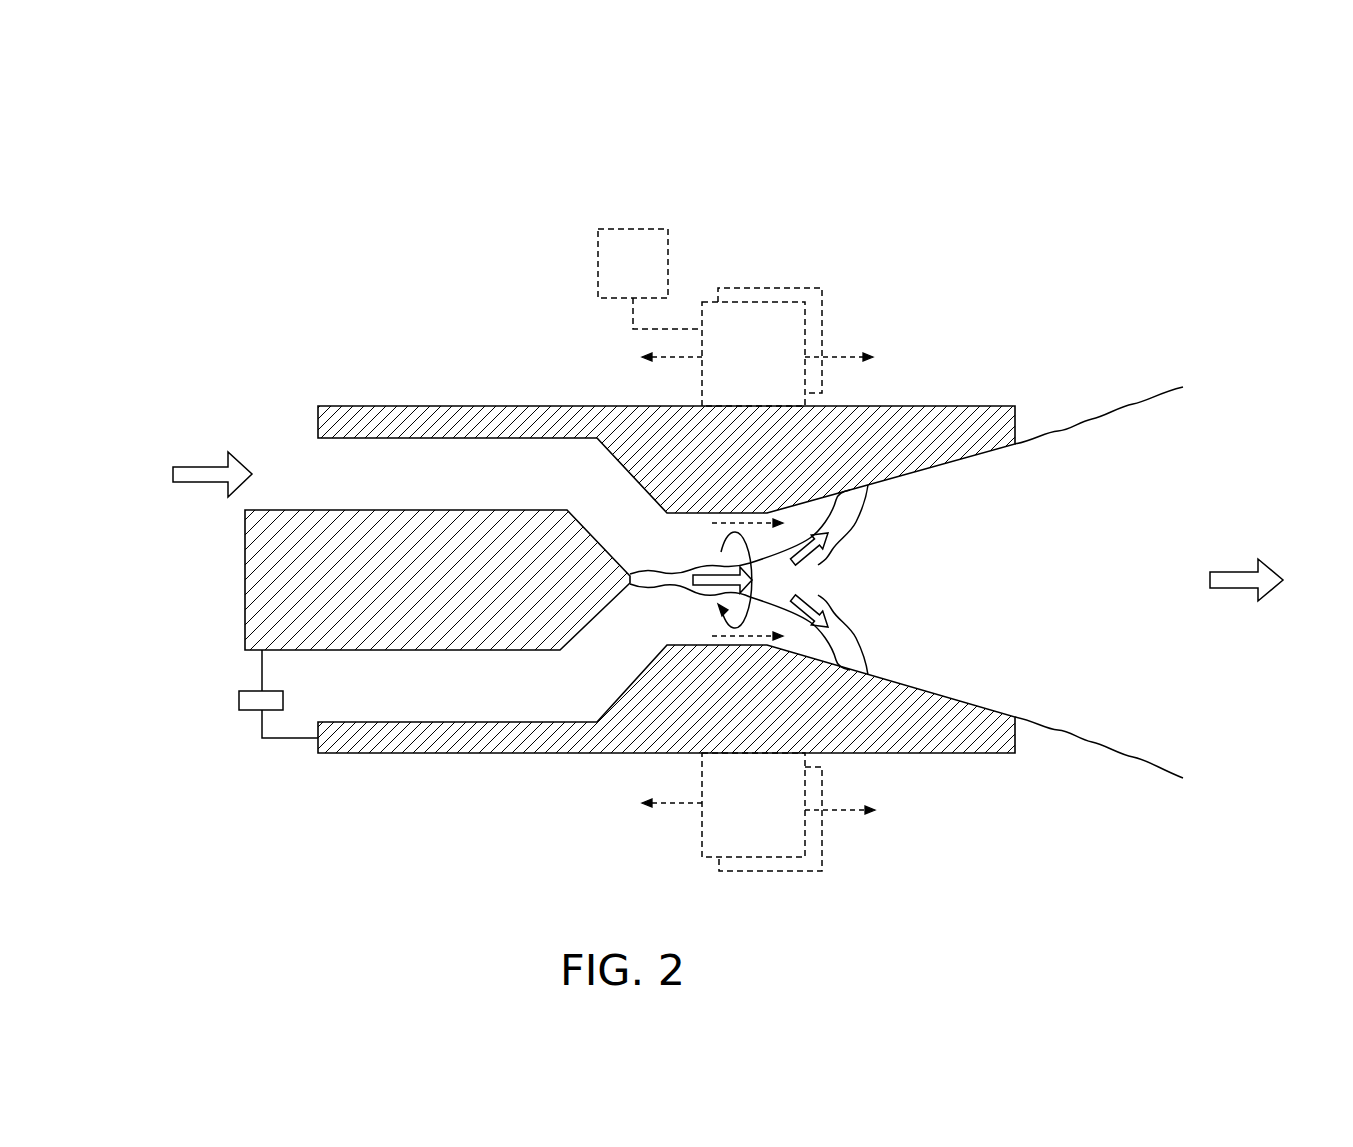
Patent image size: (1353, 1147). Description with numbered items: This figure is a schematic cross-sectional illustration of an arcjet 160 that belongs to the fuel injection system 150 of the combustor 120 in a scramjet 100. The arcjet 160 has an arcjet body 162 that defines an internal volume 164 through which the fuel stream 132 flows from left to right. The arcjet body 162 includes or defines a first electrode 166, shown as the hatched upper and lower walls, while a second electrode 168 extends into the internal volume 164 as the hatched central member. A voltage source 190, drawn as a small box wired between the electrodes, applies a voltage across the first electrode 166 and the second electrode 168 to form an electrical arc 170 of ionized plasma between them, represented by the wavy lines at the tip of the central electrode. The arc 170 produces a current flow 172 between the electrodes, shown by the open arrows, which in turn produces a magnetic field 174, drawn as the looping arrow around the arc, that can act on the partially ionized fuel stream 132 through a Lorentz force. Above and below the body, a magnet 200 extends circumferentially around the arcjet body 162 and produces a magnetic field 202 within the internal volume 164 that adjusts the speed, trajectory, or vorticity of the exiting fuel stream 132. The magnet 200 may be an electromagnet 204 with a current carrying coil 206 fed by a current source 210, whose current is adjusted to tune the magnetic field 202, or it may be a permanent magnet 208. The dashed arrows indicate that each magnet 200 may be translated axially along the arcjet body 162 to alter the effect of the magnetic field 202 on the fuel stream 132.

The scramjet 100 is at (326, 112).
The combustor 120 is at (346, 167).
The fuel stream 132 is at (208, 466).
The fuel injection system 150 is at (366, 222).
The arcjet 160 is at (384, 277).
The arcjet body 162 is at (355, 406).
The internal volume 164 is at (441, 693).
The first electrode 166 is at (245, 585).
The second electrode 168 is at (433, 405).
The electrical arc 170 is at (668, 571).
The current flow 172 is at (700, 588).
The magnetic field 174 is at (722, 550).
The voltage source 190 is at (239, 698).
The magnet 200 is at (733, 301).
The magnetic field 202 is at (747, 520).
The electromagnet 204 is at (795, 318).
The current carrying coil 206 is at (792, 320).
The permanent magnet 208 is at (800, 864).
The current source 210 is at (633, 228).